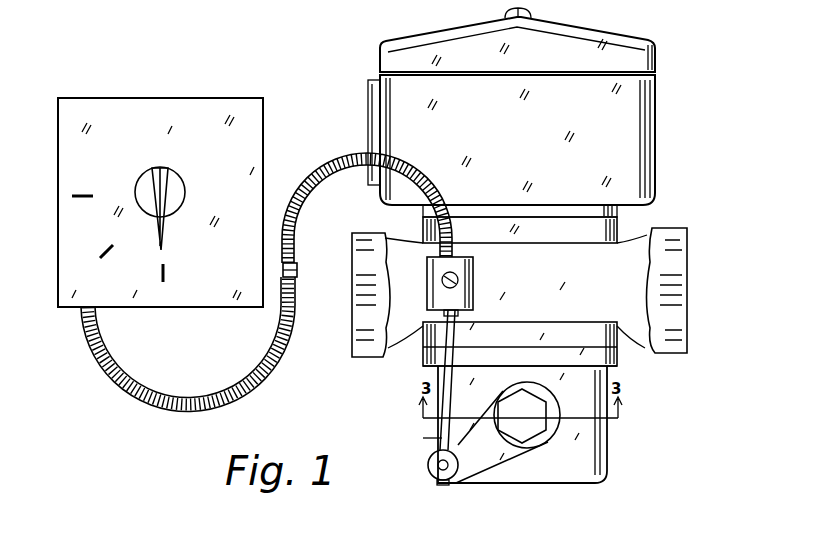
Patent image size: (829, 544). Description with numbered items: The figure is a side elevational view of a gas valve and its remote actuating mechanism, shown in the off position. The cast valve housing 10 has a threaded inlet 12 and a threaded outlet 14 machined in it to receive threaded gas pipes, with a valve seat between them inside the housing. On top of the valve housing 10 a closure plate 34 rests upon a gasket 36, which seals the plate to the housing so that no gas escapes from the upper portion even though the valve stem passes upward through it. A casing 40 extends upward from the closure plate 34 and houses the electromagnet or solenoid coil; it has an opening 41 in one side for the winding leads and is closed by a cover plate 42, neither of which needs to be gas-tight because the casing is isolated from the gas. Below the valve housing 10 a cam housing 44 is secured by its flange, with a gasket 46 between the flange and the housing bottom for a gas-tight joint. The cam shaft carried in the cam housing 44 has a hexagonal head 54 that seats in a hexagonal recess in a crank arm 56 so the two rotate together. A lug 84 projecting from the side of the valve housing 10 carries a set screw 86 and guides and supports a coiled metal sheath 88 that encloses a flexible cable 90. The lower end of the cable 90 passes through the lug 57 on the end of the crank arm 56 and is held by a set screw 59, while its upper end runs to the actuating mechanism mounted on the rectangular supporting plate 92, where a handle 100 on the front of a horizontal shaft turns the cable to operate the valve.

The valve housing 10 is at (560, 291).
The threaded inlet 12 is at (690, 297).
The threaded outlet 14 is at (350, 332).
The closure plate 34 is at (600, 203).
The gasket 36 is at (620, 213).
The casing 40 is at (615, 148).
The opening 41 is at (370, 122).
The cover plate 42 is at (622, 62).
The cam housing 44 is at (590, 435).
The gasket 46 is at (618, 355).
The hexagonal head 54 is at (527, 437).
The crank arm 56 is at (497, 455).
The lug 57 is at (427, 473).
The set screw 59 is at (452, 482).
The lug 84 is at (433, 274).
The set screw 86 is at (448, 312).
The sheath 88 is at (318, 188).
The flexible cable 90 is at (297, 273).
The supporting plate 92 is at (193, 293).
The handle 100 is at (167, 227).